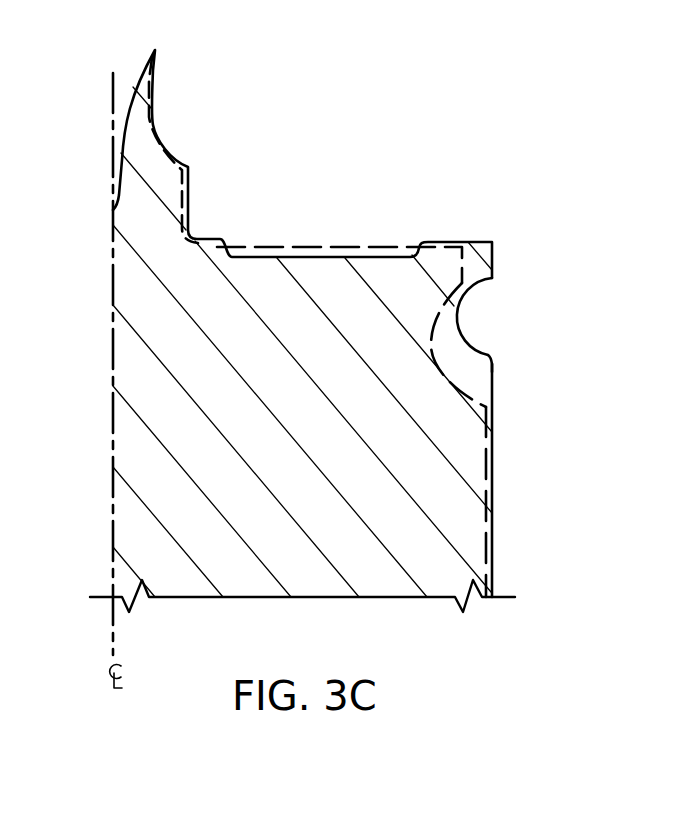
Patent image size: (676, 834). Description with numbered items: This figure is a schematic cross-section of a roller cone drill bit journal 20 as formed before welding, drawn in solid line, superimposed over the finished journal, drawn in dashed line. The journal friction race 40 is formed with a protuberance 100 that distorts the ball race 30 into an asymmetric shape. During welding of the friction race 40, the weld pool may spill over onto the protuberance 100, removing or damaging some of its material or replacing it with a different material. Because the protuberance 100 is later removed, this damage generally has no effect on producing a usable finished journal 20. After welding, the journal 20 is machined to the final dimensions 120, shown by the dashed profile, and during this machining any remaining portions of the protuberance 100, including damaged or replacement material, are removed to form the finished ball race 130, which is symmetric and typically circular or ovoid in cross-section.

The journal 20 is at (122, 433).
The final dimensions 120 is at (324, 246).
The ball race 30 is at (465, 293).
The protuberance 100 is at (482, 368).
The finished ball race 130 is at (464, 388).
The journal friction race 40 is at (493, 465).